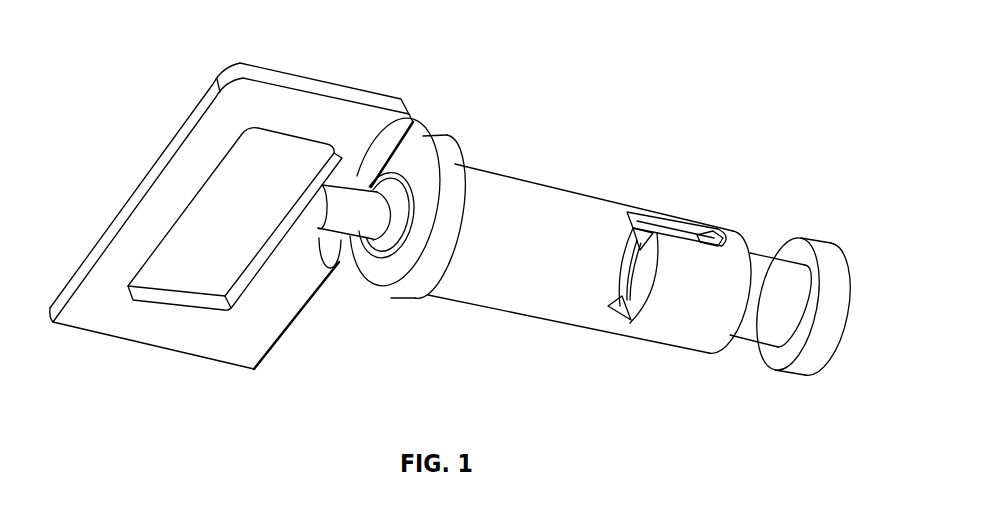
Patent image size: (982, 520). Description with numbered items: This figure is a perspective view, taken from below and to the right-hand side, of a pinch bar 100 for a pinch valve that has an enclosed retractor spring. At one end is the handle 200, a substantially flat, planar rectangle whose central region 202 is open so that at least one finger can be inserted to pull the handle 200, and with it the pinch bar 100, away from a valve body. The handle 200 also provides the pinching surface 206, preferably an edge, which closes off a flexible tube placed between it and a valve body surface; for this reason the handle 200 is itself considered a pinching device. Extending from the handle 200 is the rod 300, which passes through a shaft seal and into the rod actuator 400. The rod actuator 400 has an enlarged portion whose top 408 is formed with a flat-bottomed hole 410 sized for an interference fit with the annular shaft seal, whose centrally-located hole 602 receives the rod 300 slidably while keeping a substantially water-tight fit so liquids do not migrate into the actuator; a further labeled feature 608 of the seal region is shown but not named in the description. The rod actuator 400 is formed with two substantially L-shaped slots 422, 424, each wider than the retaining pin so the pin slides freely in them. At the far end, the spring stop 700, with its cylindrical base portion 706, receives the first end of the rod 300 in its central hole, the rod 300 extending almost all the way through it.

The pinch bar 100 is at (151, 24).
The handle 200 is at (313, 80).
The central region 202 is at (221, 272).
The pinching surface 206 is at (296, 331).
The rod 300 is at (337, 226).
The rod actuator 400 is at (542, 202).
The top 408 is at (443, 170).
The flat-bottomed hole 410 is at (428, 293).
The L-shaped slot 422 is at (673, 232).
The L-shaped slot 424 is at (621, 322).
The hole 602 is at (413, 190).
The collar opening 608 is at (383, 238).
The spring stop 700 is at (758, 327).
The base portion 706 is at (825, 253).